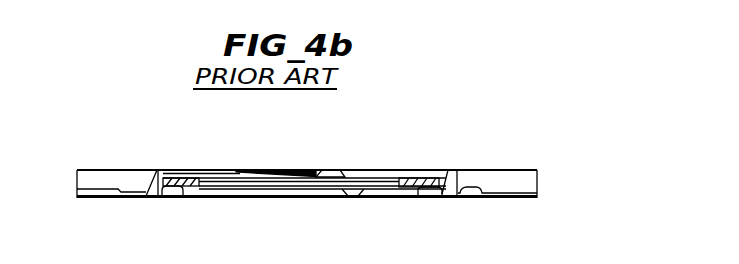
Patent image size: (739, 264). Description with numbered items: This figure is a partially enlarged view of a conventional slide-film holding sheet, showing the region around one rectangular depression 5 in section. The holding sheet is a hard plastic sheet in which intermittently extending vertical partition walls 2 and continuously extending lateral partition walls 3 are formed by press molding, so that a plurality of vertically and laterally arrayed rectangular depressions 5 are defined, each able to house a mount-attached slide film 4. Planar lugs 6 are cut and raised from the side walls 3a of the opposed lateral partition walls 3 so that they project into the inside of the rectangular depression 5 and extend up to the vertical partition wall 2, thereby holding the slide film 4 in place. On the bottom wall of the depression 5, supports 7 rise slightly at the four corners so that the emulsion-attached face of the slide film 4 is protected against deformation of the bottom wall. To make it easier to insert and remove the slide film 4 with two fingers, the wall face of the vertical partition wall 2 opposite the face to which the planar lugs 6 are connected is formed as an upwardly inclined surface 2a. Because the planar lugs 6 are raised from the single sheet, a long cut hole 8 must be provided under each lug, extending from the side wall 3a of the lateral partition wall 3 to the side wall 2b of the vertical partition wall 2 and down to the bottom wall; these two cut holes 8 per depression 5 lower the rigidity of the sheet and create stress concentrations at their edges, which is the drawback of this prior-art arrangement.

The vertical partition wall 2 is at (157, 171).
The upwardly inclined surface 2a is at (147, 178).
The side wall of vertical partition wall 2b is at (172, 170).
The lateral partition wall 3 is at (368, 170).
The side wall of lateral partition wall 3a is at (388, 173).
The slide film 4 is at (351, 192).
The rectangular depression 5 is at (357, 168).
The planar lug 6 is at (314, 171).
The support 7 is at (169, 196).
The long cut hole 8 is at (238, 193).